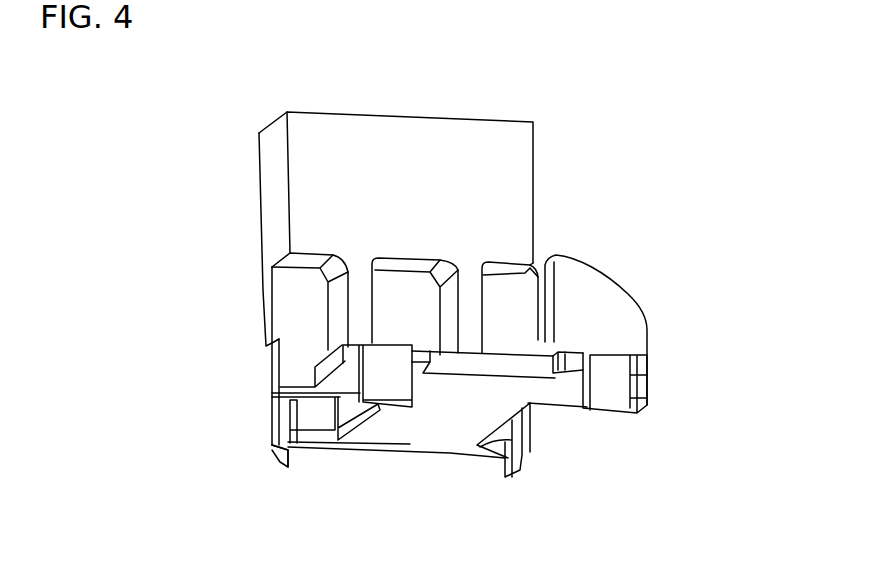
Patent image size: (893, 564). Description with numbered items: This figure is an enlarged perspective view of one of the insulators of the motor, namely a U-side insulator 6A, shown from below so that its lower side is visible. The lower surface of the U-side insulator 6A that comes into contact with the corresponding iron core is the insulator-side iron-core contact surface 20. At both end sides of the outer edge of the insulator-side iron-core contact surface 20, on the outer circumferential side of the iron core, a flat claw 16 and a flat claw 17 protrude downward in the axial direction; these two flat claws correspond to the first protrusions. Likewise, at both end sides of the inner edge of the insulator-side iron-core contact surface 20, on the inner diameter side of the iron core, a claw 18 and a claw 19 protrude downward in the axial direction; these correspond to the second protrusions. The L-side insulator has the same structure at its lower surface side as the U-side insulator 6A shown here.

The U-side insulator 6A is at (508, 202).
The flat claw 16 is at (375, 377).
The flat claw 17 is at (613, 367).
The claw 18 is at (277, 462).
The claw 19 is at (512, 477).
The insulator-side iron-core contact surface 20 is at (408, 440).